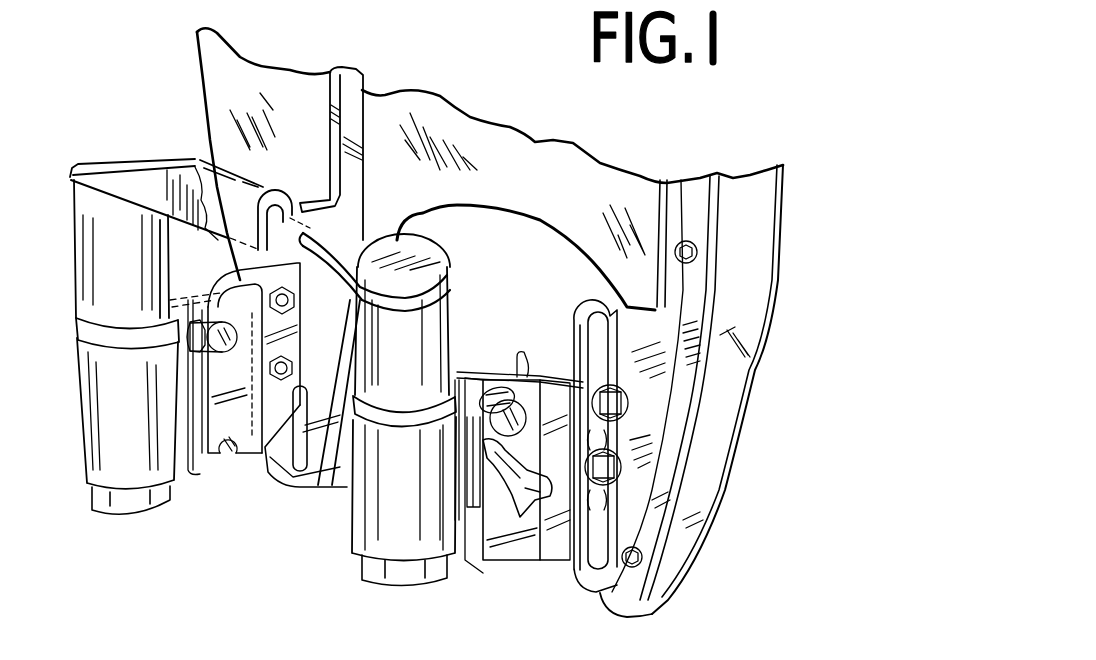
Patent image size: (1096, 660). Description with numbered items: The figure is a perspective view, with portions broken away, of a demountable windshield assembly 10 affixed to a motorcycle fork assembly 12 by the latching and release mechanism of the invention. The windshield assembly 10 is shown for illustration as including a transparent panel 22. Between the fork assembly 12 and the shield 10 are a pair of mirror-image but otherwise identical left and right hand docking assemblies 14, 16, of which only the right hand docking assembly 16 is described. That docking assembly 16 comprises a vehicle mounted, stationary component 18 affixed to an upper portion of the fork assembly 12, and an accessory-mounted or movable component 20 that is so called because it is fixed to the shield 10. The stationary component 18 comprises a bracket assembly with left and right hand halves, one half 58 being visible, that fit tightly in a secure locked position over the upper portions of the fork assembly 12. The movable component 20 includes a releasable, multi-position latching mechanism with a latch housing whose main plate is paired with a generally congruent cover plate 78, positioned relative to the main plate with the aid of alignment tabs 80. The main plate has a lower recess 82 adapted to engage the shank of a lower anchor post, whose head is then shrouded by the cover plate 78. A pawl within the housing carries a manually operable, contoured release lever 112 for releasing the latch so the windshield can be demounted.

The demountable windshield assembly 10 is at (421, 76).
The fork assembly 12 is at (176, 145).
The left hand docking assembly 14 is at (212, 262).
The right hand docking assembly 16 is at (475, 351).
The vehicle mounted stationary component 18 is at (74, 486).
The accessory-mounted movable component 20 is at (548, 362).
The transparent panel 22 is at (605, 156).
The right hand half 58 is at (407, 543).
The cover plate 78 is at (502, 550).
The alignment tabs 80 is at (463, 517).
The lower recess 82 is at (228, 458).
The release lever 112 is at (490, 437).